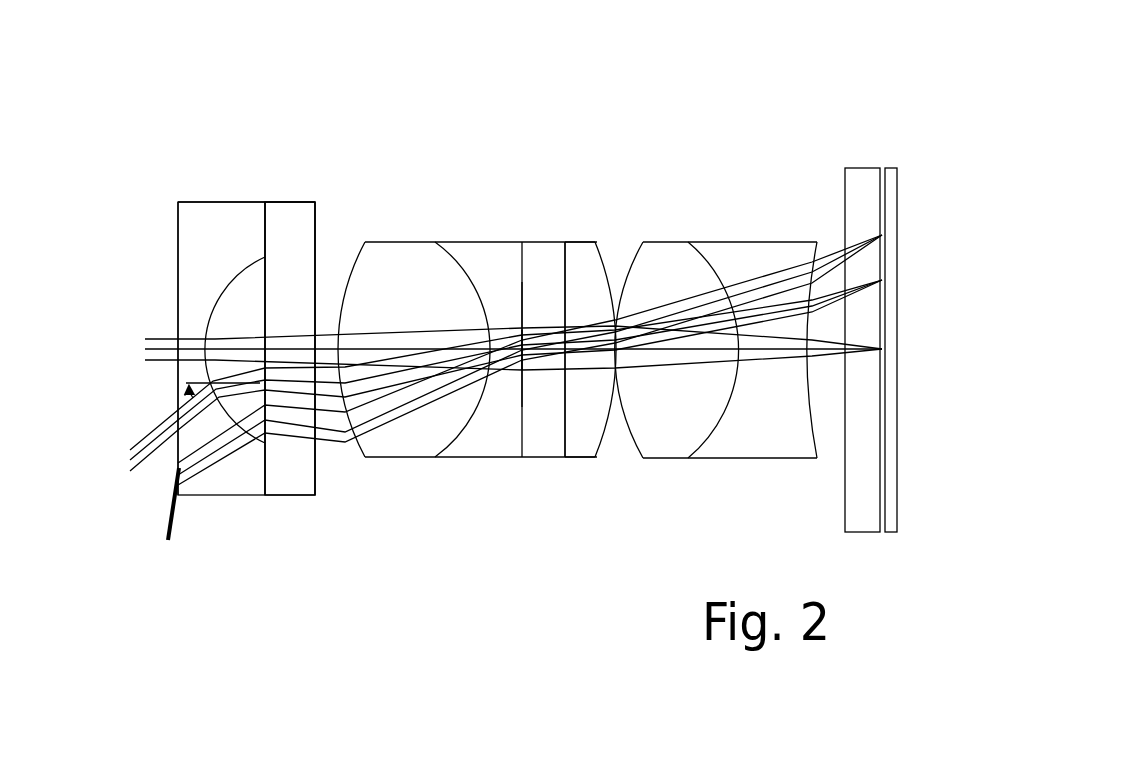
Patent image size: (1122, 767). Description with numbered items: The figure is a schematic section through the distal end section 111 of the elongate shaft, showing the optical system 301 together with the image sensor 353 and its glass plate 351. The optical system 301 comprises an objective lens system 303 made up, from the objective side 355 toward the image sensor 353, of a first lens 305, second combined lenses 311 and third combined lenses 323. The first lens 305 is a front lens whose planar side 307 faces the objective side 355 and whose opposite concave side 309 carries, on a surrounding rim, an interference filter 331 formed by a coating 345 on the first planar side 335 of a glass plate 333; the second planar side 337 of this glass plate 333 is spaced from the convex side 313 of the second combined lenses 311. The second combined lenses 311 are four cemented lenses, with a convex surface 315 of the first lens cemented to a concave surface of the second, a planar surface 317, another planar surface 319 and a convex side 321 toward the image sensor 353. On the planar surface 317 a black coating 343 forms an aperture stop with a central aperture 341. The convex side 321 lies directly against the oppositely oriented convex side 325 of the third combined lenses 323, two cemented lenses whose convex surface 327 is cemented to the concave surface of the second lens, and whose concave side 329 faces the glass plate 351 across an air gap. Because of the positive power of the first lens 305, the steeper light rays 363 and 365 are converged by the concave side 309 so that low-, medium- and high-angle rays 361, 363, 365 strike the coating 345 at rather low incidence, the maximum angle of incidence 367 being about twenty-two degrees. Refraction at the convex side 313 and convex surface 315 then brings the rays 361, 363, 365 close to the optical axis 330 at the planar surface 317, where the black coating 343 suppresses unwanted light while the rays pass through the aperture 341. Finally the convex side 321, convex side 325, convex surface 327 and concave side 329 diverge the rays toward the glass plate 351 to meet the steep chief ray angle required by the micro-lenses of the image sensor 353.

The distal end section 111 is at (375, 89).
The optical system 301 is at (527, 109).
The objective lens system 303 is at (308, 541).
The first lens 305 is at (193, 230).
The planar side 307 is at (178, 300).
The concave side 309 is at (208, 375).
The second combined lenses 311 is at (470, 232).
The convex side 313 is at (345, 458).
The convex surface 315 is at (455, 450).
The planar surface 317 is at (530, 433).
The planar surface 319 is at (565, 412).
The convex side 321 is at (607, 432).
The third combined lenses 323 is at (710, 233).
The convex side 325 is at (618, 270).
The convex surface 327 is at (717, 270).
The concave side 329 is at (810, 413).
The optical axis 330 is at (486, 400).
The interference filter 331 is at (267, 186).
The glass plate 333 is at (288, 215).
The first planar side 335 is at (265, 282).
The second planar side 337 is at (315, 223).
The aperture 341 is at (514, 355).
The black coating 343 is at (522, 407).
The coating 345 is at (265, 223).
The glass plate 351 is at (857, 177).
The image sensor 353 is at (890, 258).
The objective side 355 is at (103, 222).
The light rays with a low angle of incidence 361 is at (163, 346).
The light rays with a medium angle of incidence 363 is at (160, 437).
The light rays with a high angle of incidence 365 is at (172, 510).
The maximum angle of incidence 367 is at (185, 397).